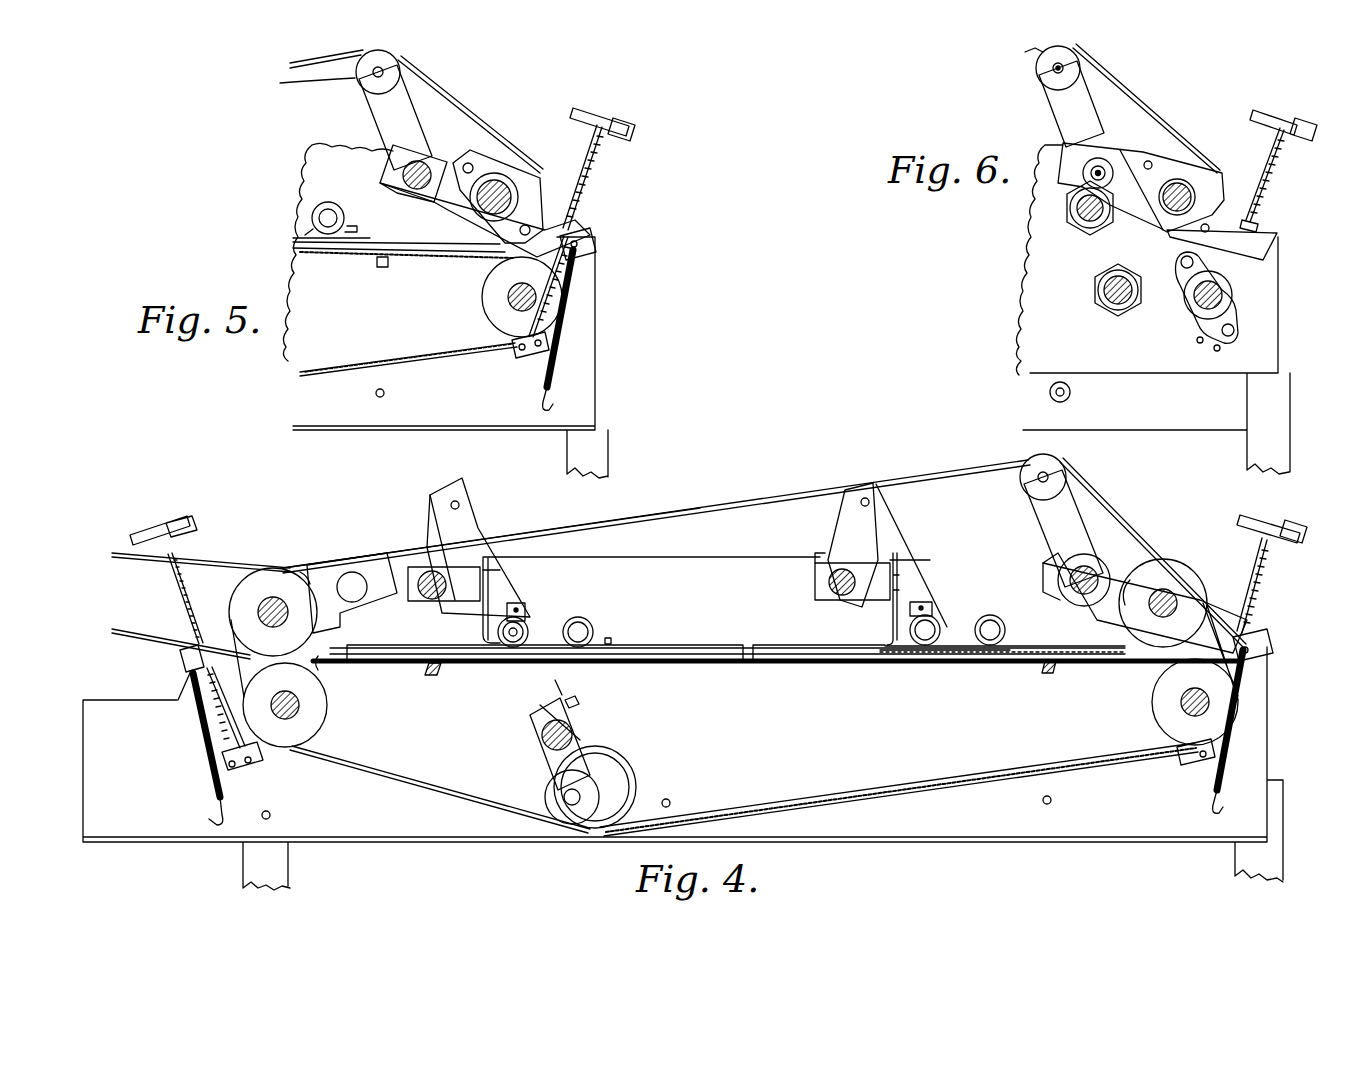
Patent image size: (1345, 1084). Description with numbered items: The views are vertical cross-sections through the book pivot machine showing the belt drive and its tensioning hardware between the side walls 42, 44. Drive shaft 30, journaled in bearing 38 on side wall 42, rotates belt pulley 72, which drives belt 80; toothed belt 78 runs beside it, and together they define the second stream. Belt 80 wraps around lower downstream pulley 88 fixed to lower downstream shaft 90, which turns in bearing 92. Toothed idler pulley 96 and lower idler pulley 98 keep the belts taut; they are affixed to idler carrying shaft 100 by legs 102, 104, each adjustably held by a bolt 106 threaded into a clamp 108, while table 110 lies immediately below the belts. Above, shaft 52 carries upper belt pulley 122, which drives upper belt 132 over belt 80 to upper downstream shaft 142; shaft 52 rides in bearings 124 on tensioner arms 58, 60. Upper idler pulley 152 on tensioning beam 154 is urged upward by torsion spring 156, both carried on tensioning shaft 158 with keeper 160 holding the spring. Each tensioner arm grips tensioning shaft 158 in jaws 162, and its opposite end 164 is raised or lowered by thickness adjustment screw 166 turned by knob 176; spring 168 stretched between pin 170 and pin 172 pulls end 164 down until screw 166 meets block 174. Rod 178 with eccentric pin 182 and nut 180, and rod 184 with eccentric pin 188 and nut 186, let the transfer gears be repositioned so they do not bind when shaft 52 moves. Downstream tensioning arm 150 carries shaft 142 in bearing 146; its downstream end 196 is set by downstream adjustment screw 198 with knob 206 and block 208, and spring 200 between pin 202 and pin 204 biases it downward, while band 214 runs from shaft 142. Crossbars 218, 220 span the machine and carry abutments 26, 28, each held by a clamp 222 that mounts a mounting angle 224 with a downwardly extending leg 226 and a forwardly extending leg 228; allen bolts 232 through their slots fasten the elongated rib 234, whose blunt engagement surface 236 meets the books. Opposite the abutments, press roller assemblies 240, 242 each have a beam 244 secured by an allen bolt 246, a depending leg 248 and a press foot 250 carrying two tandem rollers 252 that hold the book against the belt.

In FIG. 4, the abutment 26 is at (825, 655).
In FIG. 4, the abutment 28 is at (674, 633).
In FIG. 4, the drive shaft 30 is at (1185, 705).
In FIG. 6, the drive shaft 30 is at (1215, 300).
In FIG. 6, the bearing 38 is at (1235, 298).
In FIG. 6, the side wall 42 is at (1265, 275).
In FIG. 4, the side wall 44 is at (1085, 825).
In FIG. 5, the side wall 44 is at (330, 420).
In FIG. 4, the shaft 52 is at (1180, 610).
In FIG. 5, the shaft 52 is at (505, 190).
In FIG. 6, the shaft 52 is at (1180, 180).
In FIG. 5, the tensioner arm 58 is at (480, 165).
In FIG. 6, the tensioner arm 58 is at (1140, 160).
In FIG. 4, the tensioner arm 60 is at (1128, 565).
In FIG. 4, the belt pulley 72 is at (1235, 712).
In FIG. 5, the belt pulley 72 is at (522, 297).
In FIG. 4, the toothed belt 78 is at (1005, 780).
In FIG. 5, the toothed belt 78 is at (450, 350).
In FIG. 4, the belt 80 is at (860, 790).
In FIG. 4, the lower downstream pulley 88 is at (310, 725).
In FIG. 4, the lower downstream shaft 90 is at (300, 712).
In FIG. 4, the bearing 92 is at (322, 676).
In FIG. 4, the toothed idler pulley 96 is at (625, 780).
In FIG. 4, the lower idler pulley 98 is at (550, 800).
In FIG. 4, the idler carrying shaft 100 is at (583, 735).
In FIG. 4, the leg 102 is at (573, 742).
In FIG. 4, the leg 104 is at (552, 760).
In FIG. 4, the bolt 106 is at (590, 703).
In FIG. 4, the clamp 108 is at (560, 710).
In FIG. 4, the table 110 is at (935, 660).
In FIG. 5, the upper belt pulley 122 is at (530, 165).
In FIG. 5, the bearing 124 is at (487, 175).
In FIG. 4, the upper belt 132 is at (690, 500).
In FIG. 5, the upper belt 132 is at (438, 95).
In FIG. 6, the upper belt 132 is at (1120, 90).
In FIG. 4, the upper downstream shaft 142 is at (276, 597).
In FIG. 4, the bearing 146 is at (305, 572).
In FIG. 4, the downstream tensioning arm 150 is at (340, 560).
In FIG. 4, the upper idler pulley 152 is at (1065, 463).
In FIG. 5, the upper idler pulley 152 is at (355, 72).
In FIG. 6, the upper idler pulley 152 is at (1033, 75).
In FIG. 4, the tensioning beam 154 is at (1055, 525).
In FIG. 5, the tensioning beam 154 is at (380, 115).
In FIG. 6, the tensioning beam 154 is at (1060, 105).
In FIG. 4, the torsion spring 156 is at (1068, 560).
In FIG. 4, the tensioning shaft 158 is at (1083, 592).
In FIG. 5, the tensioning shaft 158 is at (418, 165).
In FIG. 4, the keeper 160 is at (1045, 570).
In FIG. 5, the jaws 162 is at (385, 160).
In FIG. 5, the end 164 is at (578, 230).
In FIG. 4, the thickness adjustment screw 166 is at (1262, 575).
In FIG. 5, the thickness adjustment screw 166 is at (585, 195).
In FIG. 6, the thickness adjustment screw 166 is at (1275, 158).
In FIG. 4, the spring 168 is at (1230, 775).
In FIG. 5, the spring 168 is at (565, 345).
In FIG. 4, the pin 170 is at (1255, 650).
In FIG. 5, the pin 170 is at (592, 244).
In FIG. 4, the pin 172 is at (1210, 815).
In FIG. 5, the pin 172 is at (550, 405).
In FIG. 4, the block 174 is at (1195, 765).
In FIG. 5, the block 174 is at (518, 352).
In FIG. 4, the knob 176 is at (1255, 520).
In FIG. 5, the knob 176 is at (600, 115).
In FIG. 6, the knob 176 is at (1265, 115).
In FIG. 6, the rod 178 is at (1115, 305).
In FIG. 6, the nut 180 is at (1095, 283).
In FIG. 6, the eccentrically mounted pin 182 is at (1135, 300).
In FIG. 6, the rod 184 is at (1072, 222).
In FIG. 6, the nut 186 is at (1065, 208).
In FIG. 6, the eccentrically mounted pin 188 is at (1098, 215).
In FIG. 4, the downstream end 196 is at (180, 660).
In FIG. 4, the downstream adjustment screw 198 is at (195, 585).
In FIG. 4, the spring 200 is at (210, 770).
In FIG. 4, the pin 202 is at (218, 822).
In FIG. 4, the pin 204 is at (190, 678).
In FIG. 4, the knob 206 is at (150, 520).
In FIG. 4, the block 208 is at (250, 770).
In FIG. 4, the band 214 is at (145, 640).
In FIG. 4, the crossbar 218 is at (818, 556).
In FIG. 4, the crossbar 220 is at (500, 558).
In FIG. 4, the clamp 222 is at (510, 582).
In FIG. 4, the mounting angle 224 is at (500, 605).
In FIG. 4, the downwardly extending leg 226 is at (905, 555).
In FIG. 4, the forwardly extending leg 228 is at (560, 615).
In FIG. 4, the allen bolt 232 is at (608, 638).
In FIG. 4, the elongated rib 234 is at (630, 648).
In FIG. 4, the blunt engagement surface 236 is at (1040, 660).
In FIG. 4, the press roller assembly 240 is at (915, 507).
In FIG. 4, the press roller assembly 242 is at (532, 523).
In FIG. 4, the beam 244 is at (438, 515).
In FIG. 4, the allen bolt 246 is at (410, 600).
In FIG. 4, the depending leg 248 is at (485, 540).
In FIG. 4, the press foot 250 is at (525, 660).
In FIG. 4, the rollers 252 is at (490, 663).